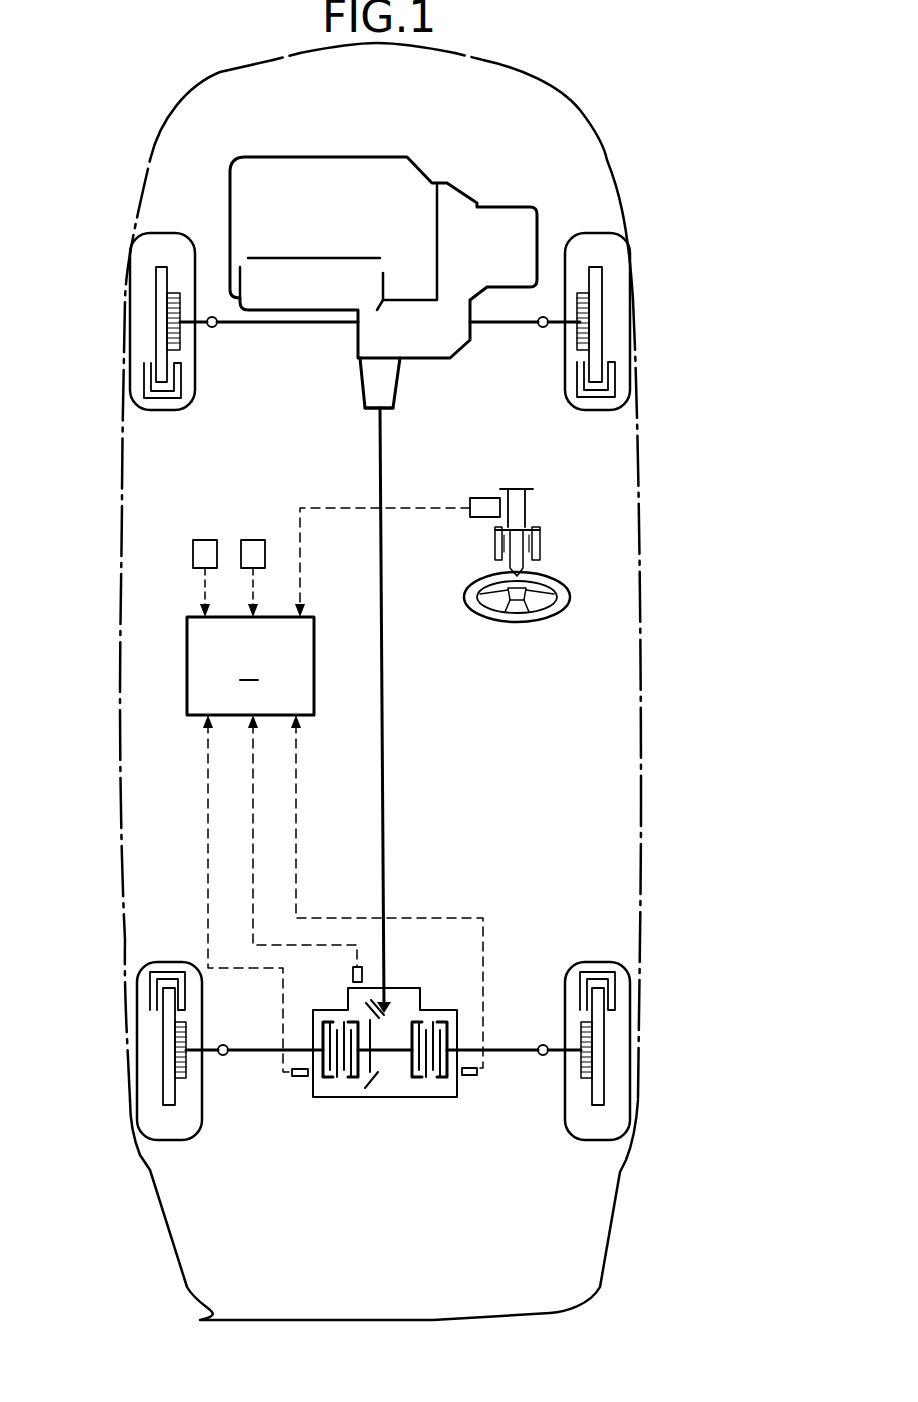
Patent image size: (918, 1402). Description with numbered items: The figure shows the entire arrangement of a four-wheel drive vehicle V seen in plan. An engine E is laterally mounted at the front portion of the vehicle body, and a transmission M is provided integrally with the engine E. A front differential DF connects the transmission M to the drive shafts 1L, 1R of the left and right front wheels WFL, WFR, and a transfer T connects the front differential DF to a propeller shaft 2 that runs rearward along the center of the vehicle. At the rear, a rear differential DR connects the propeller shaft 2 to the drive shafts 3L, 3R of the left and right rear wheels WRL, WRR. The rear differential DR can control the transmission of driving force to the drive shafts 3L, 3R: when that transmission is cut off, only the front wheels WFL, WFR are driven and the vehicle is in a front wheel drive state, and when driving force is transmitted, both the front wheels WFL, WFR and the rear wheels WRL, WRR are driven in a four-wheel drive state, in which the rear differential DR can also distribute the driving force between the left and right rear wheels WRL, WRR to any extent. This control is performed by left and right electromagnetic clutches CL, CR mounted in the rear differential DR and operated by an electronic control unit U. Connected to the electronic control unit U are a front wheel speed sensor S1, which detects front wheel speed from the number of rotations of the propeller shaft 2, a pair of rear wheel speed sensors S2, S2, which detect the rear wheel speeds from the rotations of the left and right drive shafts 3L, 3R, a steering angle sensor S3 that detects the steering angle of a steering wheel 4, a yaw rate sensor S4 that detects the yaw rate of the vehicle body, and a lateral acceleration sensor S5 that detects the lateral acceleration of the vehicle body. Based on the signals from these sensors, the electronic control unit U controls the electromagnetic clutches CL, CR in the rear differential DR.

The four-wheel drive vehicle V is at (652, 500).
The engine E is at (366, 160).
The transmission M is at (492, 218).
The front differential DF is at (420, 348).
The transfer T is at (385, 380).
The propeller shaft 2 is at (383, 641).
The drive shaft of left front wheel 1L is at (273, 327).
The drive shaft of right front wheel 1R is at (505, 328).
The left front wheel WFL is at (132, 268).
The right front wheel WFR is at (633, 255).
The electronic control unit U is at (250, 666).
The lateral acceleration sensor S5 is at (203, 545).
The yaw rate sensor S4 is at (252, 545).
The steering angle sensor S3 is at (480, 498).
The steering wheel 4 is at (547, 613).
The rear differential DR is at (500, 996).
The left electromagnetic clutch CL is at (330, 1099).
The right electromagnetic clutch CR is at (428, 1099).
The drive shaft of left rear wheel 3L is at (259, 1053).
The drive shaft of right rear wheel 3R is at (500, 1052).
The front wheel speed sensor S1 is at (353, 978).
The rear wheel speed sensor S2 is at (470, 1078).
The left rear wheel WRL is at (137, 978).
The right rear wheel WRR is at (632, 1005).